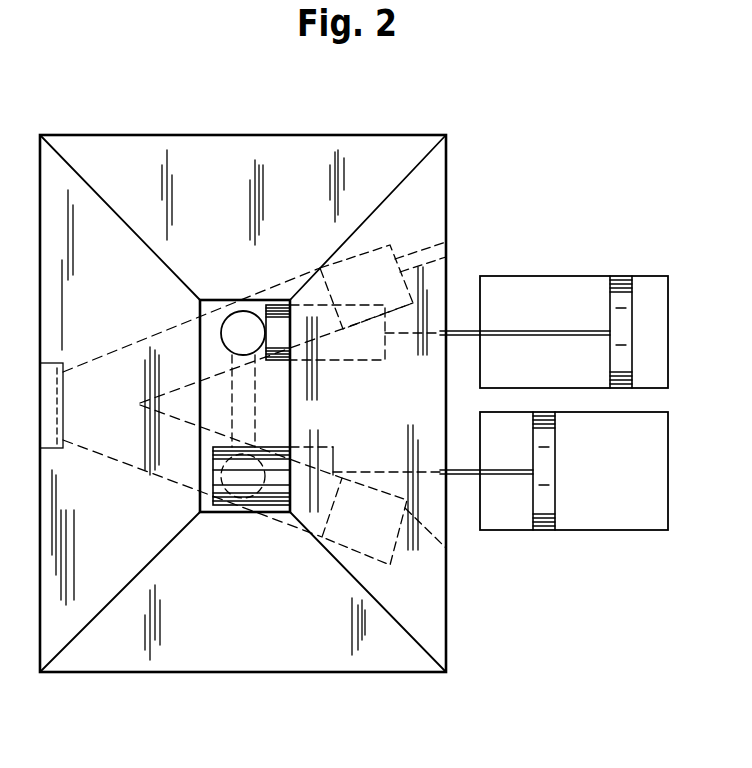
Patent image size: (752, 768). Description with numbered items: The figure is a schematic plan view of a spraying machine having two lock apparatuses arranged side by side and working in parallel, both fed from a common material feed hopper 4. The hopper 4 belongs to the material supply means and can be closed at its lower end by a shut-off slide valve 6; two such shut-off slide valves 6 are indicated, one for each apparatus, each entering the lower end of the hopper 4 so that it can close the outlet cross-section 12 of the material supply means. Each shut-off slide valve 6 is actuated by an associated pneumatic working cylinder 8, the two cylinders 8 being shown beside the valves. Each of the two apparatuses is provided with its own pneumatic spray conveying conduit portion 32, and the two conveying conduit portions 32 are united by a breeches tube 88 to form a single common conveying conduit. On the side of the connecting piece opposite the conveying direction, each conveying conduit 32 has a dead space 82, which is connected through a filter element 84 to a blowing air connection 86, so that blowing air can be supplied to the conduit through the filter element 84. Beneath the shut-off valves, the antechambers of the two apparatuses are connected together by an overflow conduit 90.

The material feed hopper 4 is at (371, 657).
The shut-off slide valve 6 is at (343, 353).
The pneumatic working cylinder 8 is at (576, 258).
The outlet cross-section 12 is at (237, 320).
The pneumatic spray conveying conduit 32 is at (148, 343).
The dead space 82 is at (312, 288).
The filter element 84 is at (390, 247).
The blowing air connection 86 is at (425, 257).
The breeches tube 88 is at (107, 398).
The overflow conduit 90 is at (237, 422).